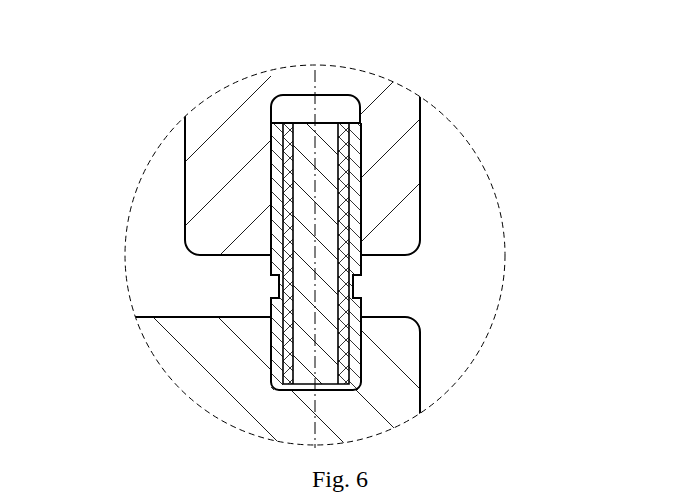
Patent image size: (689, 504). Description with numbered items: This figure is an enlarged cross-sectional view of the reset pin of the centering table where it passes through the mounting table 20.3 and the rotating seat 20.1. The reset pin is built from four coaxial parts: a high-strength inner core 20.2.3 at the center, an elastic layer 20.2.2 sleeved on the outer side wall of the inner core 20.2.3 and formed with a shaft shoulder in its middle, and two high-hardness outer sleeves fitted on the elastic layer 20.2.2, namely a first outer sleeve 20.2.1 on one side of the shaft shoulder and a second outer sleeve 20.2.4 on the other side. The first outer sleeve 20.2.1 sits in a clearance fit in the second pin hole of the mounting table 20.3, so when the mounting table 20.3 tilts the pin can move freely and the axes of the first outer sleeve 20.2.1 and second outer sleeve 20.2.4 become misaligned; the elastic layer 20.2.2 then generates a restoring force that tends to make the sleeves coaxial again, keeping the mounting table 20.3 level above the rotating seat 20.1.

The rotating seat 20.1 is at (344, 252).
The mounting table 20.3 is at (344, 252).
The first outer sleeve 20.2.1 is at (380, 152).
The elastic layer 20.2.2 is at (377, 202).
The inner core 20.2.3 is at (352, 268).
The second outer sleeve 20.2.4 is at (379, 341).